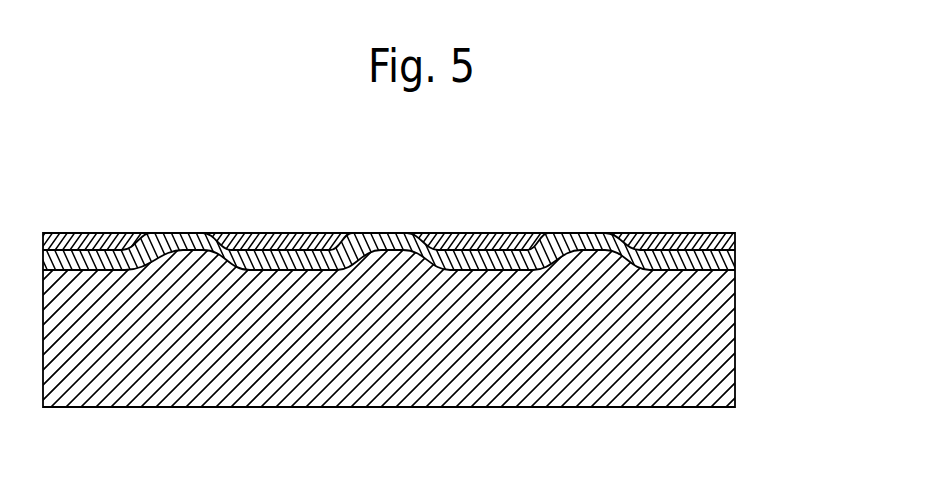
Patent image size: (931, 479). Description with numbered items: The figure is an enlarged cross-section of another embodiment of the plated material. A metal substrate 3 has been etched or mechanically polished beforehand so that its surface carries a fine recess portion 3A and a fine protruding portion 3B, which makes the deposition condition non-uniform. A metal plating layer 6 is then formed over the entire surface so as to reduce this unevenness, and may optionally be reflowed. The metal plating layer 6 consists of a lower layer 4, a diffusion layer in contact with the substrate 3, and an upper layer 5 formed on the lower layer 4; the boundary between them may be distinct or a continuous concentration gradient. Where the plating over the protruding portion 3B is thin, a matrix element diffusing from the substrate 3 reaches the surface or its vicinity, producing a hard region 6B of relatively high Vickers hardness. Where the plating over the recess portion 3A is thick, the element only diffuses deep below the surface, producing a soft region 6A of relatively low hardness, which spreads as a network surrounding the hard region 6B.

The metal substrate 3 is at (717, 323).
The fine recess portion 3A is at (302, 233).
The fine protruding portion 3B is at (203, 233).
The lower layer (diffusion layer) 4 is at (735, 262).
The upper layer 5 is at (735, 245).
The metal plating layer 6 is at (799, 196).
The soft region 6A is at (89, 233).
The hard region 6B is at (187, 233).